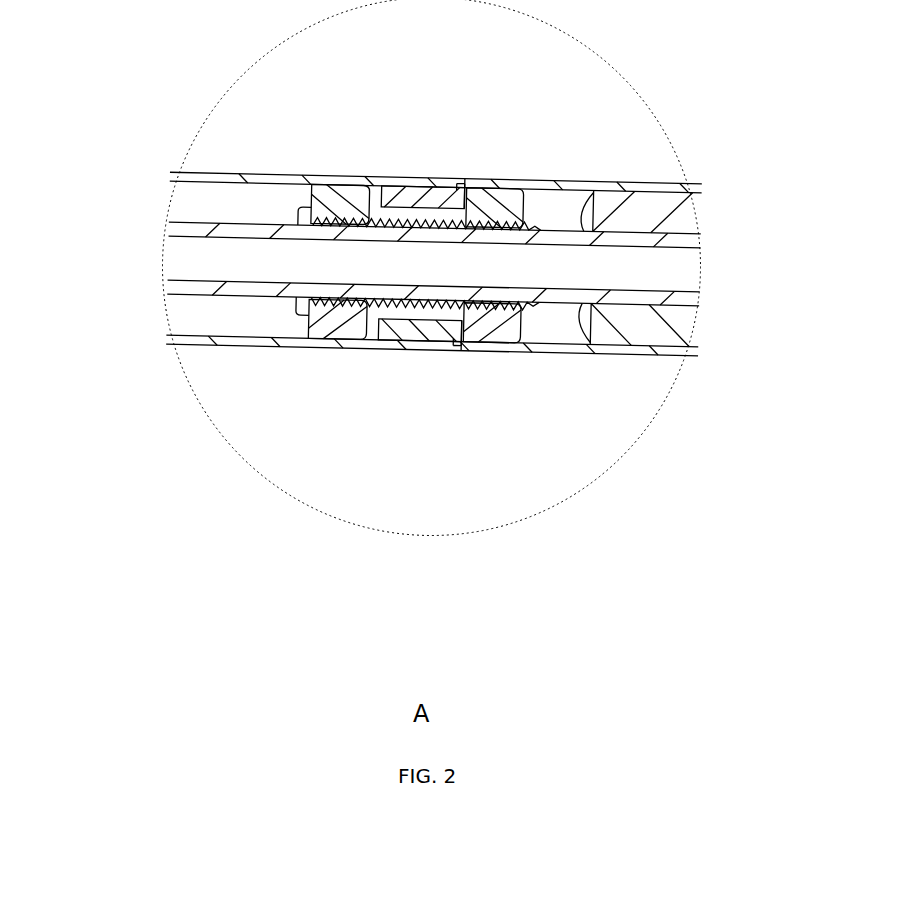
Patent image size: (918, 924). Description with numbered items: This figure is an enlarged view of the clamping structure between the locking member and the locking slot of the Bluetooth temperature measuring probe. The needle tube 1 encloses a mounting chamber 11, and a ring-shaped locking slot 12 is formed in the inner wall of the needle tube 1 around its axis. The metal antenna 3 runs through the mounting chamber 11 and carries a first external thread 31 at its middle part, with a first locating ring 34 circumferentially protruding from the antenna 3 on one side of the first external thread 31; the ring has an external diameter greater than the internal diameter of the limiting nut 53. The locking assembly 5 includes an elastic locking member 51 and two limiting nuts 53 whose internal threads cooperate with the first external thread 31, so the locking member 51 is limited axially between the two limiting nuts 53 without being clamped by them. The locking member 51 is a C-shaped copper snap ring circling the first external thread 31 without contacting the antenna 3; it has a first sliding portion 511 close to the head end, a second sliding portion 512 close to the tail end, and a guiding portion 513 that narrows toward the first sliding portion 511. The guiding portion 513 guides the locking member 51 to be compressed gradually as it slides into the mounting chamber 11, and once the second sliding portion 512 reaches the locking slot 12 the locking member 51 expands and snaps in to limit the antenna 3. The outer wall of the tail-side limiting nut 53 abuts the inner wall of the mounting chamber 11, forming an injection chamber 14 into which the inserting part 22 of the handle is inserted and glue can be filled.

The needle tube 1 is at (384, 266).
The mounting chamber 11 is at (203, 198).
The locking slot 12 is at (440, 345).
The antenna 3 is at (390, 285).
The first external thread 31 is at (455, 310).
The first locating ring 34 is at (298, 210).
The locking assembly 5 is at (467, 286).
The locking member 51 is at (478, 186).
The first sliding portion 511 is at (388, 200).
The second sliding portion 512 is at (458, 183).
The guiding portion 513 is at (453, 185).
The limiting nut 53 is at (340, 335).
The injection chamber 14 is at (568, 208).
The inserting part 22 is at (650, 333).